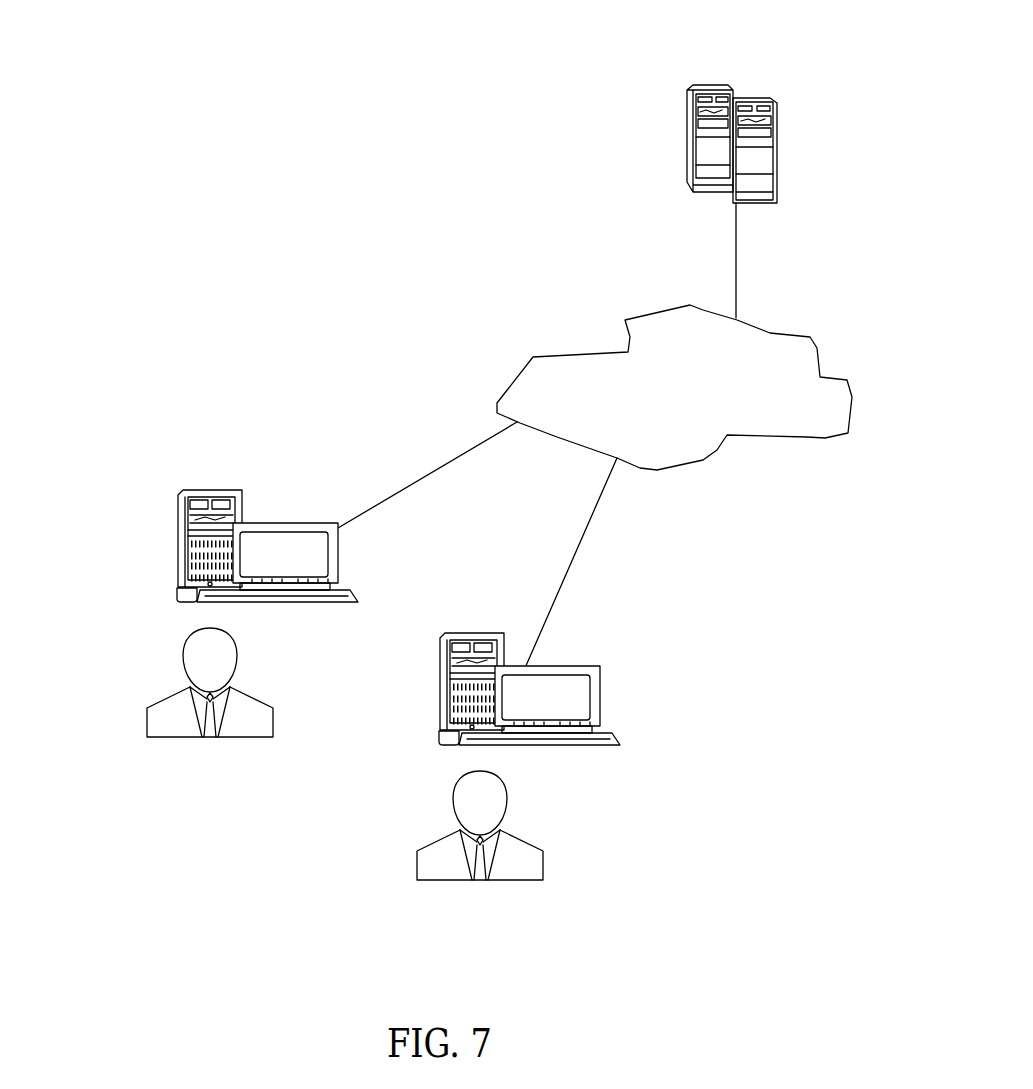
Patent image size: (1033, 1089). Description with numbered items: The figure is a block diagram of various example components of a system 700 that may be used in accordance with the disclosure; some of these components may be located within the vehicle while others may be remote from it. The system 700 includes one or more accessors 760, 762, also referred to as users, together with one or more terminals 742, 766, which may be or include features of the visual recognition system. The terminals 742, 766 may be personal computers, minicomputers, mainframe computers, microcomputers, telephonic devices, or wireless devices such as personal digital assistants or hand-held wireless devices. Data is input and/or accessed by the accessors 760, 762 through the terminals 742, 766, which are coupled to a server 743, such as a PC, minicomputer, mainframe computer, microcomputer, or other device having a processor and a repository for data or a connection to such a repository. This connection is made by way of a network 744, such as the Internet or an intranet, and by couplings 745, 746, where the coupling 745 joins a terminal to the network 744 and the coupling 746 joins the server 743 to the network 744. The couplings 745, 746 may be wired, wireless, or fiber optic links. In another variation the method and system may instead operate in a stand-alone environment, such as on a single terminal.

The system 700 is at (283, 116).
The terminal 742 is at (178, 498).
The server 743 is at (768, 97).
The network 744 is at (628, 337).
The coupling 745 is at (428, 472).
The coupling 746 is at (733, 245).
The accessor 760 is at (147, 707).
The accessor 762 is at (545, 857).
The terminal 766 is at (600, 697).